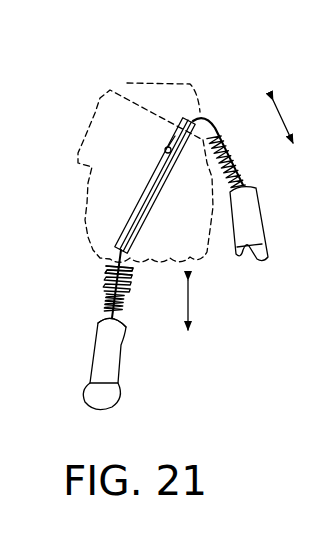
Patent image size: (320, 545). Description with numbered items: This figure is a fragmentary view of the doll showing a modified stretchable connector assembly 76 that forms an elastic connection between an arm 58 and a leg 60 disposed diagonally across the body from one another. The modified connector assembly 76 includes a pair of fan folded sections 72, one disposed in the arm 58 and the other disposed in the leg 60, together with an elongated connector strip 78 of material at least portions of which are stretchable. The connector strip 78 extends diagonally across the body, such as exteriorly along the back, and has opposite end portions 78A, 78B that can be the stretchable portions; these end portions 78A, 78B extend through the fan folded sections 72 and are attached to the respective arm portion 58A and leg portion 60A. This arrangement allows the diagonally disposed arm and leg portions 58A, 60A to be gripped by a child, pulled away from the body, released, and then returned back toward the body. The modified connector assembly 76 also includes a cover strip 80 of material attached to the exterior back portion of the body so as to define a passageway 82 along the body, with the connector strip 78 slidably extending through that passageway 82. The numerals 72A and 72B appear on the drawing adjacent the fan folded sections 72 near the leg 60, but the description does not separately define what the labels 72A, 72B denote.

The modified stretchible connector assembly 76 is at (145, 157).
The elongated connector strip 78 is at (150, 200).
The end portion of connector strip 78A is at (218, 135).
The end portion of connector strip 78B is at (103, 302).
The cover strip 80 is at (135, 208).
The passageway 82 is at (170, 146).
The fan folded section 72 is at (223, 157).
The lower spring end 72A is at (125, 293).
The spring coils 72B is at (105, 272).
The arm 58 is at (254, 186).
The arm portion 58A is at (262, 228).
The leg 60 is at (93, 332).
The leg portion 60A is at (115, 357).